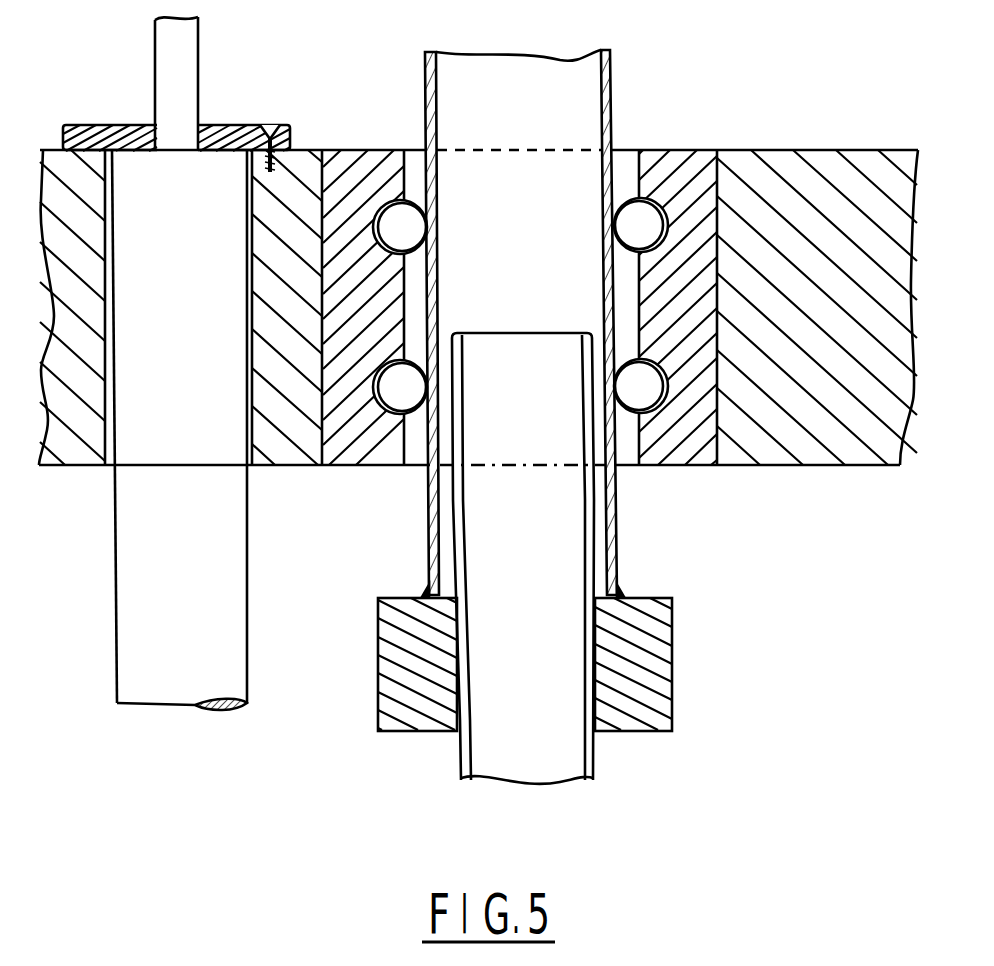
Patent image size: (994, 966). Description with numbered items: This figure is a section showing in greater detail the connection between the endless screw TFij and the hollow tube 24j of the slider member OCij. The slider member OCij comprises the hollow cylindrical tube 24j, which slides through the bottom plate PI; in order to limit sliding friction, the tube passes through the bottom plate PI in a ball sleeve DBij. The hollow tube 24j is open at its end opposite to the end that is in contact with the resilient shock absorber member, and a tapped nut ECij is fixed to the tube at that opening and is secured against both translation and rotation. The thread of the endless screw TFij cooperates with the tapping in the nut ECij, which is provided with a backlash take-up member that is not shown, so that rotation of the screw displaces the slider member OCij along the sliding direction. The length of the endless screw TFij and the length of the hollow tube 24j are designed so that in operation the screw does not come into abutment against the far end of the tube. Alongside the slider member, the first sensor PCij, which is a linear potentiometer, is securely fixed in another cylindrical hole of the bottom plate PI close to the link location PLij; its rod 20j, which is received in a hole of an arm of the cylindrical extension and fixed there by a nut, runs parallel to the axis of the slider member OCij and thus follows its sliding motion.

The rod 20j is at (190, 91).
The hollow cylindrical tube 24j is at (425, 82).
The slider member OCij is at (623, 93).
The link location PLij is at (700, 138).
The bottom plate PI is at (851, 165).
The ball sleeve DBij is at (703, 457).
The tapped nut ECij is at (653, 632).
The endless screw TFij is at (570, 755).
The first sensor PCij is at (233, 675).